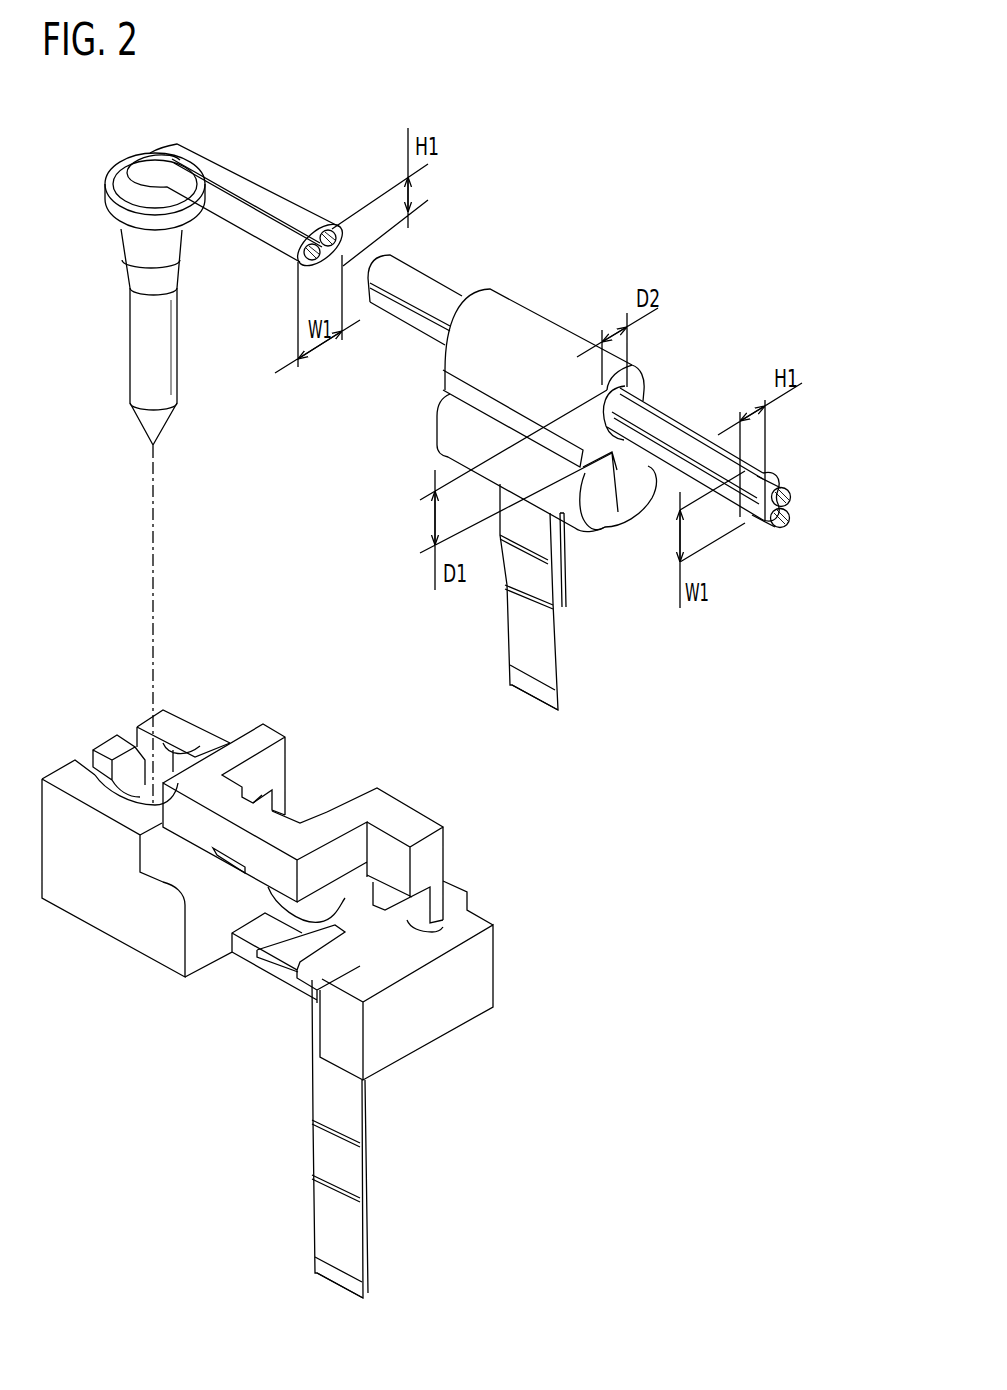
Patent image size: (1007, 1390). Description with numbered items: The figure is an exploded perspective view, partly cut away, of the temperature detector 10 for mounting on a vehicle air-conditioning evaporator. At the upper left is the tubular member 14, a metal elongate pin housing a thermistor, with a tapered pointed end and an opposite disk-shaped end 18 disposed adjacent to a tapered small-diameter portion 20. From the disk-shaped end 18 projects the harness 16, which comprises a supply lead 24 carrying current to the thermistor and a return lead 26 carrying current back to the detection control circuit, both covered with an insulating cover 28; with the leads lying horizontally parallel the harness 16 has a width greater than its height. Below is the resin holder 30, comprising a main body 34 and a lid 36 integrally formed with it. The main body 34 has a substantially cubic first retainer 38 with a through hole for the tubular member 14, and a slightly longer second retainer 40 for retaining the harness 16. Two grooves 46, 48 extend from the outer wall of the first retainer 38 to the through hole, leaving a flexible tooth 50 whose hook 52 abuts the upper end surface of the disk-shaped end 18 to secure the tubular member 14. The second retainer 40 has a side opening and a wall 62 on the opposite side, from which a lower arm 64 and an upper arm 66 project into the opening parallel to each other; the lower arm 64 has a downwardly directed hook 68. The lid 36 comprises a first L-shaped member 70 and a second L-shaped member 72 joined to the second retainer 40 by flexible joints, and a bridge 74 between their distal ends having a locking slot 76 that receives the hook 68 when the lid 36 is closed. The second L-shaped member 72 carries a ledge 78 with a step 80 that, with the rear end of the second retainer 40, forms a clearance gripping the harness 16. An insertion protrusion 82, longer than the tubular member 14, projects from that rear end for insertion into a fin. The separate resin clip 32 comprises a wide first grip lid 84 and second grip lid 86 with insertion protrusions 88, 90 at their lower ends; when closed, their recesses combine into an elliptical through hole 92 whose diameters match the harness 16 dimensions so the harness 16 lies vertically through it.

The temperature detector 10 is at (334, 98).
The tubular member 14 is at (136, 348).
The harness 16 is at (717, 542).
The disk-shaped end 18 is at (107, 201).
The tapered small-diameter portion 20 is at (137, 247).
The supply lead 24 is at (767, 489).
The return lead 26 is at (786, 516).
The insulating cover 28 is at (735, 513).
The holder 30 is at (202, 882).
The clip 32 is at (542, 278).
The main body 34 is at (267, 1035).
The lid 36 is at (306, 788).
The first retainer 38 is at (180, 964).
The second retainer 40 is at (321, 1033).
The groove 46 is at (78, 758).
The groove 48 is at (164, 752).
The flexible tooth 50 is at (108, 747).
The hook 52 is at (130, 790).
The wall 62 is at (460, 902).
The lower arm 64 is at (328, 975).
The upper arm 66 is at (350, 905).
The hook 68 is at (297, 992).
The first L-shaped member 70 is at (285, 757).
The second L-shaped member 72 is at (377, 789).
The bridge 74 is at (300, 823).
The locking slot 76 is at (255, 805).
The ledge 78 is at (411, 807).
The step 80 is at (404, 980).
The insertion protrusion 82 is at (347, 1245).
The first grip lid 84 is at (443, 433).
The second grip lid 86 is at (633, 497).
The insertion protrusion 88 is at (518, 624).
The insertion protrusion 90 is at (563, 580).
The elliptical through hole 92 is at (622, 408).